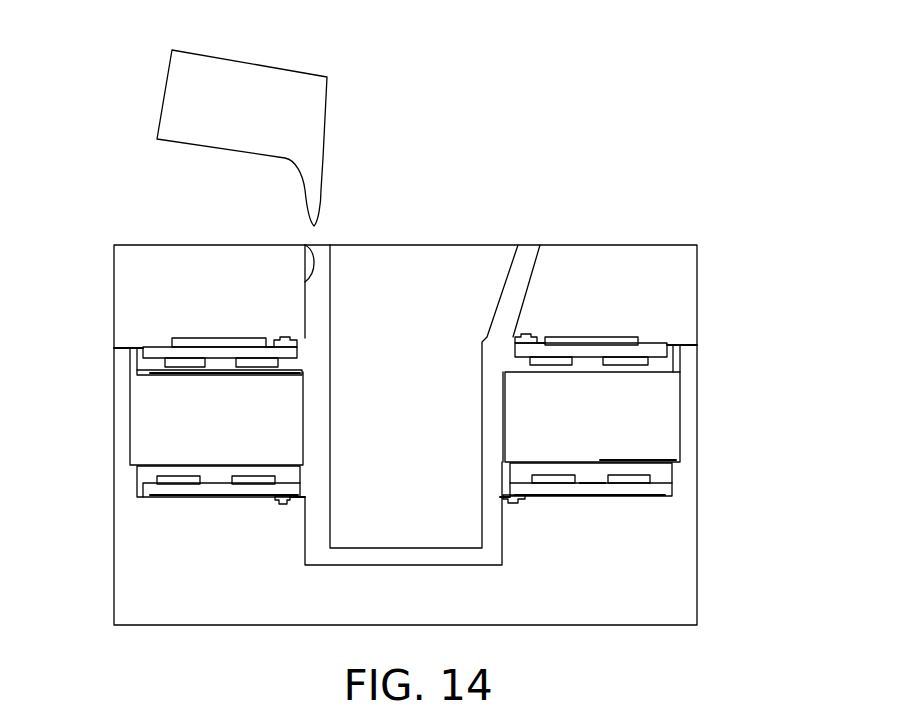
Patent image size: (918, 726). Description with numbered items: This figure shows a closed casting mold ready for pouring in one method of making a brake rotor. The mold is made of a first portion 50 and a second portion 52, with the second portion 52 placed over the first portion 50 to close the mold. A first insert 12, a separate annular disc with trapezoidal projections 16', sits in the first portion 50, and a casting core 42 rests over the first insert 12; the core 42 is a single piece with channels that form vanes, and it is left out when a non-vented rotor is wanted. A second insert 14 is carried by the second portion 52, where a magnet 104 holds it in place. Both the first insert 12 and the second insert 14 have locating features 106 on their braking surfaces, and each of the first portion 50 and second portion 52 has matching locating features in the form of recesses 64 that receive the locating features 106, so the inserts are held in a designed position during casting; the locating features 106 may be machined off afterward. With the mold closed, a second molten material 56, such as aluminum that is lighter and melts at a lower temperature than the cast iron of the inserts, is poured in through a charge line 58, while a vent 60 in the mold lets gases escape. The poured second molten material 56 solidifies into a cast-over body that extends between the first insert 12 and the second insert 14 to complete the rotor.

The first insert 12 is at (210, 498).
The second insert 14 is at (143, 347).
The trapezoidal projections 16' is at (424, 396).
The core 42 is at (188, 424).
The first portion of the casting mold 50 is at (235, 590).
The second portion of the casting mold 52 is at (650, 270).
The second molten material 56 is at (317, 192).
The charge line 58 is at (300, 262).
The vent 60 is at (538, 242).
The recesses 64 is at (510, 338).
The magnet 104 is at (223, 338).
The locating features 106 is at (500, 340).